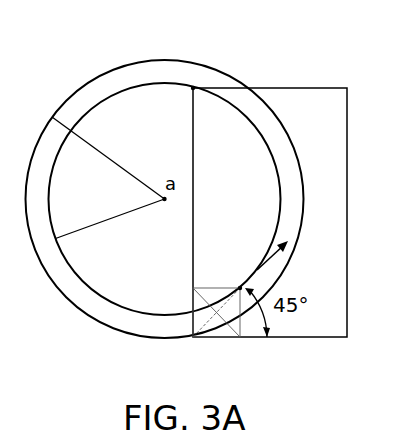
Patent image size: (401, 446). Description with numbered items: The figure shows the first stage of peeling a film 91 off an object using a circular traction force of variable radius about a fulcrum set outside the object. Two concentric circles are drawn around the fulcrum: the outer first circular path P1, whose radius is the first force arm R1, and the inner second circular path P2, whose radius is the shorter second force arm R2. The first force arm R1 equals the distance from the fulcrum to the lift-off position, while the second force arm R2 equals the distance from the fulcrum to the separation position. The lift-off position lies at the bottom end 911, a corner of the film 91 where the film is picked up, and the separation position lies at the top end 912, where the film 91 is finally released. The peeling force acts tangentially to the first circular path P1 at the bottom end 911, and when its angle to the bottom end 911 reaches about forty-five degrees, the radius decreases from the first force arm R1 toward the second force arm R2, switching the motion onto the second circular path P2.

The film 91 is at (218, 293).
The bottom end 911 is at (235, 278).
The top end 912 is at (190, 80).
The first circular path P1 is at (95, 78).
The second circular path P2 is at (105, 294).
The first force arm R1 is at (108, 158).
The second force arm R2 is at (110, 219).